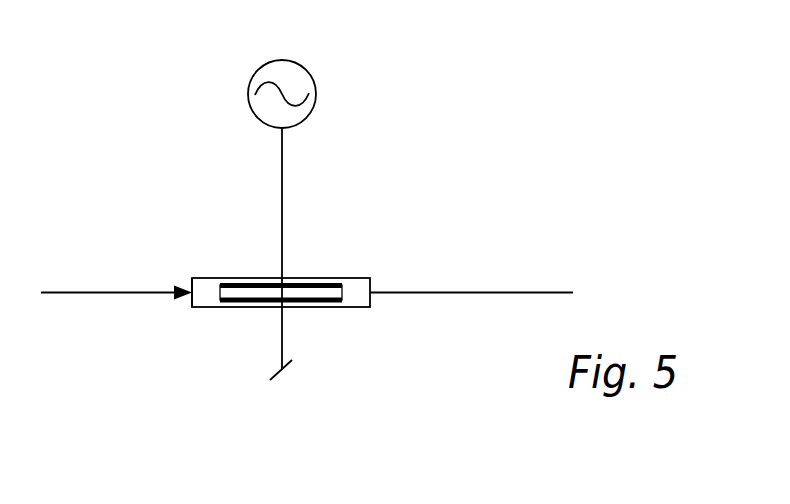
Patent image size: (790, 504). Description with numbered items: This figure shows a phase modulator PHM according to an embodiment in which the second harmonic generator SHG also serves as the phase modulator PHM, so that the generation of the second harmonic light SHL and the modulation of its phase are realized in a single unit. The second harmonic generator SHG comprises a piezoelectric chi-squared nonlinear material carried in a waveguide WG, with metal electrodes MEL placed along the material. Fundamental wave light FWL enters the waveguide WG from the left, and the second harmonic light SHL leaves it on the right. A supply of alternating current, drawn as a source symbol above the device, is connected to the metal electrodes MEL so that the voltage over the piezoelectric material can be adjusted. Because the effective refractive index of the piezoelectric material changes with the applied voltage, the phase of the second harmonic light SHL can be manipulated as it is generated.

The phase modulator PHM is at (364, 118).
The waveguide WG is at (210, 278).
The metal electrodes MEL is at (427, 187).
The fundamental wave light FWL is at (152, 292).
The second harmonic generator SHG is at (201, 308).
The second harmonic light SHL is at (423, 293).